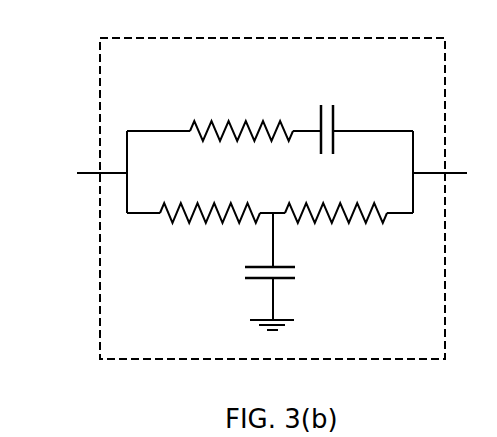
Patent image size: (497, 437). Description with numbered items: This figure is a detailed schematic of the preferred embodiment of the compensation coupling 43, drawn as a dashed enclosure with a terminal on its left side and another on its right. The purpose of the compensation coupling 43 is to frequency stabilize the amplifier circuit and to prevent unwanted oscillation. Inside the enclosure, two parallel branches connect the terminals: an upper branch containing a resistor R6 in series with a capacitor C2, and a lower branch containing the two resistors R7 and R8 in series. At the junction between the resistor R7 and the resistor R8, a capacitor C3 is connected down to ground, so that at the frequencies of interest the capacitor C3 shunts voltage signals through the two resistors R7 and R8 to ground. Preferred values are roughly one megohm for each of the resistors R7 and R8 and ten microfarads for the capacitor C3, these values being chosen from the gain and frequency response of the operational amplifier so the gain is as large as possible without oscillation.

The compensation coupling 43 is at (99, 74).
The resistor R6 is at (241, 114).
The resistor R7 is at (210, 198).
The resistor R8 is at (336, 198).
The capacitor C2 is at (325, 113).
The capacitor C3 is at (292, 272).